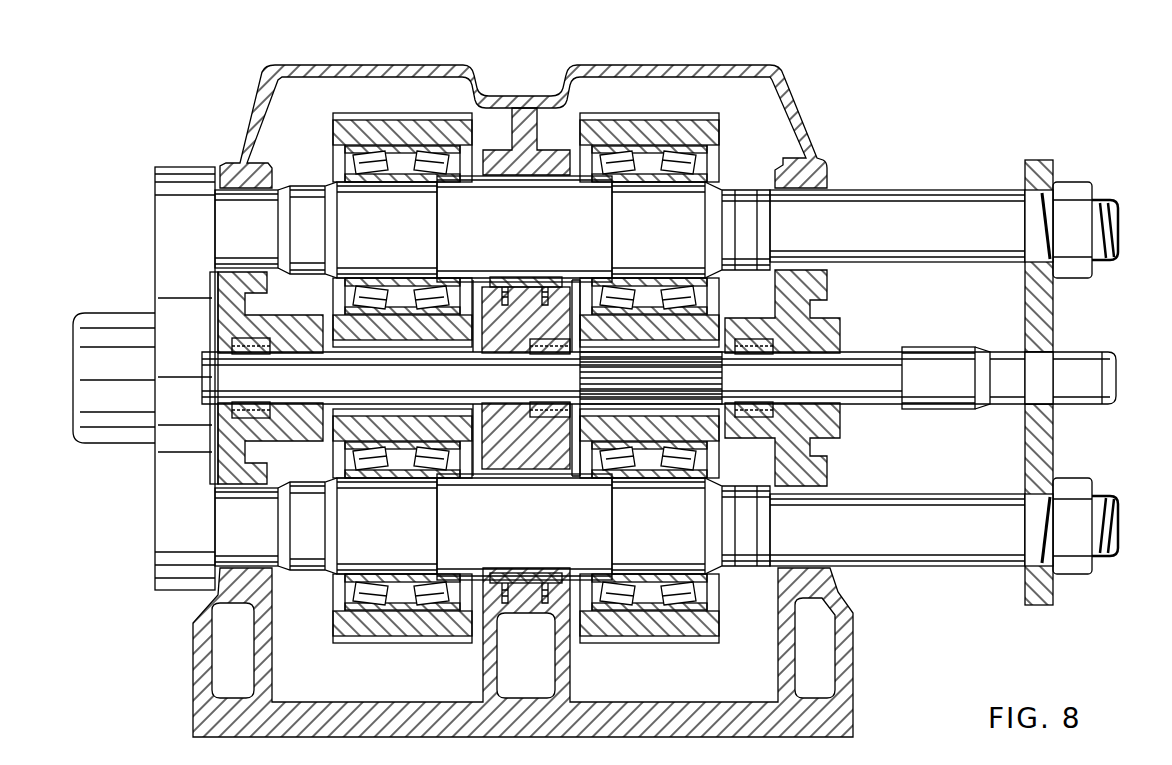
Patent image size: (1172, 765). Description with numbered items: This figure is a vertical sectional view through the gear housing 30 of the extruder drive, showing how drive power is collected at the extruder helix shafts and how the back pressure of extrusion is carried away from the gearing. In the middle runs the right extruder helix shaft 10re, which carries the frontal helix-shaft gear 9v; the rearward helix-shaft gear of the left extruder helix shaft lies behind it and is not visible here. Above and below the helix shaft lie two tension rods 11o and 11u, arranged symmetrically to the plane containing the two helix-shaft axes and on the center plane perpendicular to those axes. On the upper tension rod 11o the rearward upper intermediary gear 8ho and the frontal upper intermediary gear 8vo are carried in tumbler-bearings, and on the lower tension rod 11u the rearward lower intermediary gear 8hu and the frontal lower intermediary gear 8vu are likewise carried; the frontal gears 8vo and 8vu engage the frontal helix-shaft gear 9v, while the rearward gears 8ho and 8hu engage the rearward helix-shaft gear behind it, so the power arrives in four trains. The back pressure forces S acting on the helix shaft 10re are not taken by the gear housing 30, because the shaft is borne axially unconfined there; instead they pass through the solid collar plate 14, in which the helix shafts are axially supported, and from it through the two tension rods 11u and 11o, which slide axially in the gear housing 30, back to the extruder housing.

The rearward upper intermediary gear 8ho is at (420, 125).
The frontal upper intermediary gear 8vo is at (617, 133).
The rearward lower intermediary gear 8hu is at (343, 620).
The frontal lower intermediary gear 8vu is at (690, 627).
The upper tension rod 11o is at (866, 225).
The lower tension rod 11u is at (897, 512).
The frontal helix-shaft gear 9v is at (662, 378).
The right extruder helix shaft 10re is at (659, 350).
The solid collar plate 14 is at (183, 278).
The gear housing 30 is at (532, 90).
The back pressure force S is at (1020, 228).